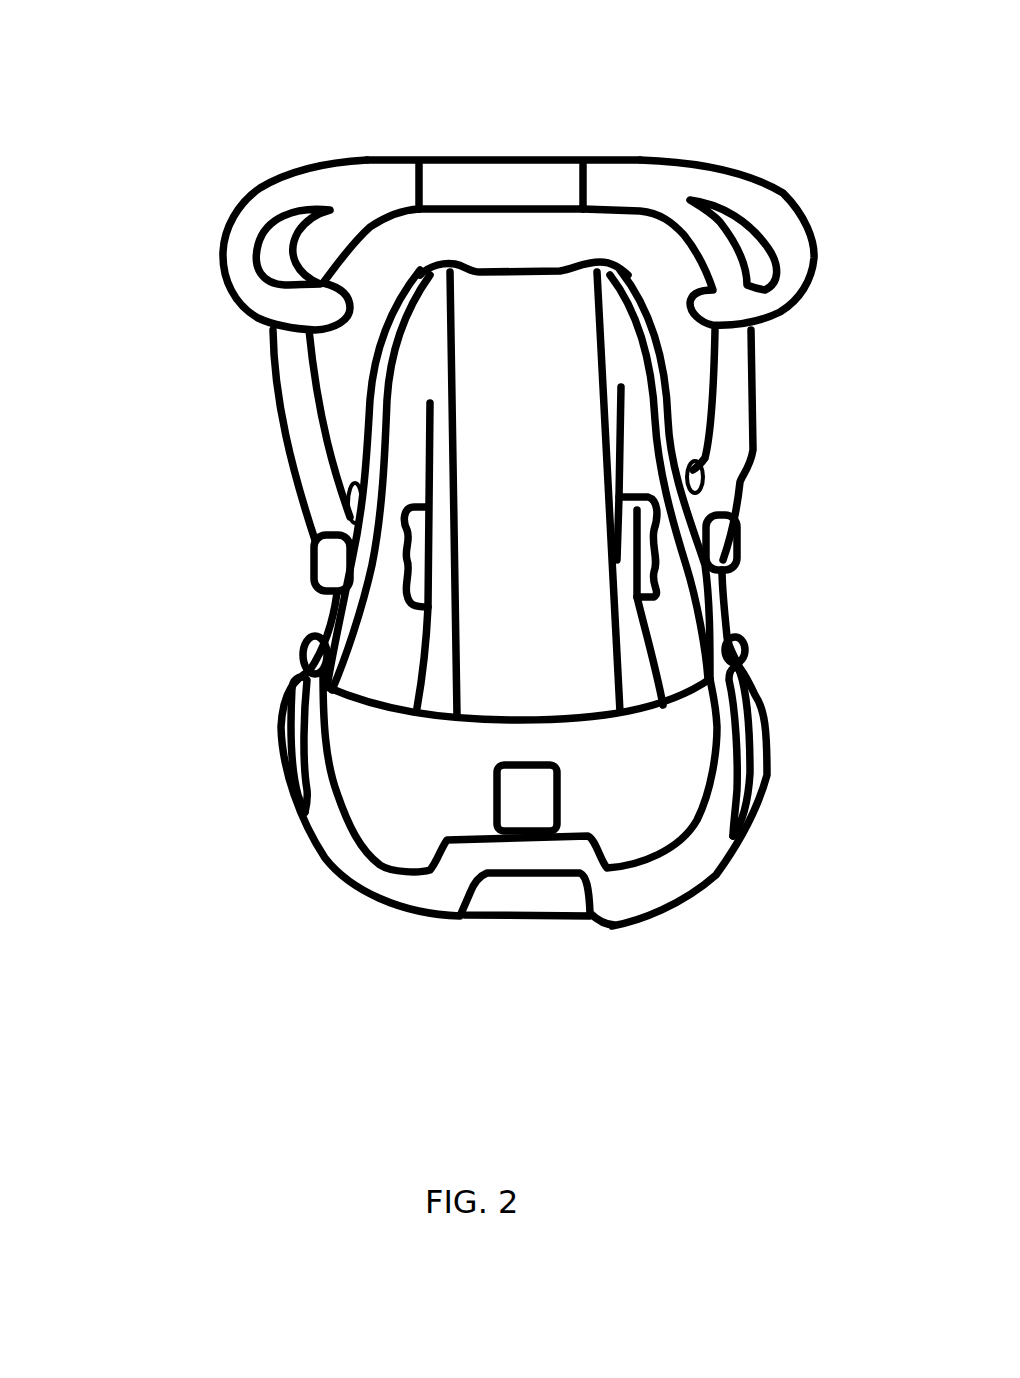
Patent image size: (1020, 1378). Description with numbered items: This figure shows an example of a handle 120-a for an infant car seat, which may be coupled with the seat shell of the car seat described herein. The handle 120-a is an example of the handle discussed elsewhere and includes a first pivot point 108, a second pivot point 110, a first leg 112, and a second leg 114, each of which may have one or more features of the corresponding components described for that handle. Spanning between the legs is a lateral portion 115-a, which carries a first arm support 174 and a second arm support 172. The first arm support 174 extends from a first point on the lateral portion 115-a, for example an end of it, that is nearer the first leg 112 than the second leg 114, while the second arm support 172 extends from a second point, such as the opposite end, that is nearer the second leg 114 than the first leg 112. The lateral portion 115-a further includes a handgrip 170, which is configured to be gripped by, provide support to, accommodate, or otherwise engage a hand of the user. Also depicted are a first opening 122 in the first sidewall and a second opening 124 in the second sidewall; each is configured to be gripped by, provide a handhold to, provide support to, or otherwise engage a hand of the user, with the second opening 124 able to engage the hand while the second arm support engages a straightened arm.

The handle 120-a is at (150, 128).
The lateral portion 115-a is at (518, 169).
The handgrip 170 is at (502, 158).
The second arm support 172 is at (800, 212).
The first arm support 174 is at (238, 212).
The first leg 112 is at (276, 442).
The second leg 114 is at (756, 436).
The first pivot point 108 is at (313, 569).
The second pivot point 110 is at (736, 559).
The first opening 122 is at (407, 588).
The second opening 124 is at (657, 568).